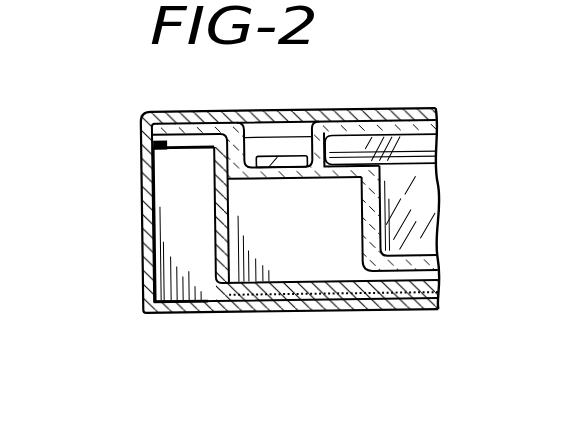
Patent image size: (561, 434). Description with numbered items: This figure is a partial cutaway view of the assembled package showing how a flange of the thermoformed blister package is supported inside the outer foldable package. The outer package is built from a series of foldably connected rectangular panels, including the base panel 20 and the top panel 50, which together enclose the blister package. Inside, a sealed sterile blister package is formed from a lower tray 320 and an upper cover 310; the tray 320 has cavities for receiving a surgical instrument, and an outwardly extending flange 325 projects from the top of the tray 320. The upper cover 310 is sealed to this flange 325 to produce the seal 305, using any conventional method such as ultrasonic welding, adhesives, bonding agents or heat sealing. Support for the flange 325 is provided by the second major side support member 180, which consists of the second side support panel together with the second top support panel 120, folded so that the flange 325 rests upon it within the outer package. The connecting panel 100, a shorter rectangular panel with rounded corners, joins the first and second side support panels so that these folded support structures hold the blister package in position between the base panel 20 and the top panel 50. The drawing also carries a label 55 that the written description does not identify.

The base panel 20 is at (432, 110).
The top panel 50 is at (413, 300).
The bottom wall 55 is at (311, 312).
The connecting panel 100 is at (437, 293).
The second top support panel 120 is at (154, 147).
The second major side support member 180 is at (143, 289).
The seal 305 is at (283, 160).
The upper cover 310 is at (357, 121).
The lower tray 320 is at (362, 247).
The outwardly extending flange 325 is at (181, 146).